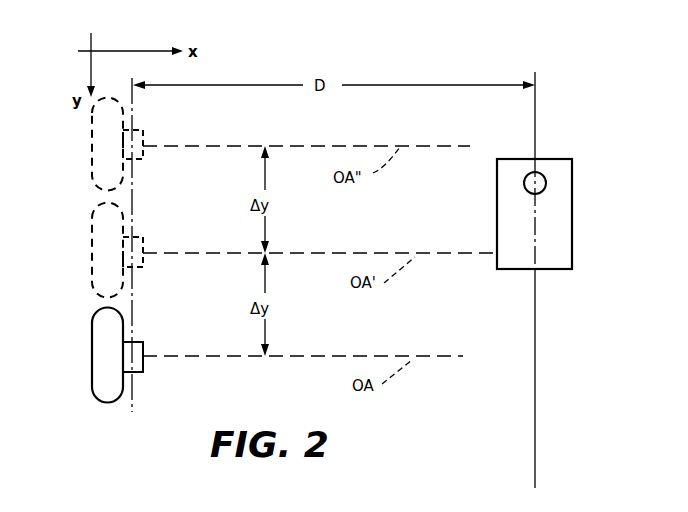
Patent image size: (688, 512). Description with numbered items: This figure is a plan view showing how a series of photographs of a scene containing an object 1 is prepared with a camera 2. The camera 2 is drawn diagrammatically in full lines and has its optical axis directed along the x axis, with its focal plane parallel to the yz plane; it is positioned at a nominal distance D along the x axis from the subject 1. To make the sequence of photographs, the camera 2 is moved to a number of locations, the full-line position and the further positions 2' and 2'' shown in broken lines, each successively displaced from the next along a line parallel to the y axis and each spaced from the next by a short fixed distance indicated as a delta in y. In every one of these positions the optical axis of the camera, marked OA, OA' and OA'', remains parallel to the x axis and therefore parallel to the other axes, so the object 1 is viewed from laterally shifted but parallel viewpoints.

The object 1 is at (579, 230).
The camera 2 is at (129, 353).
The camera location 2' is at (132, 245).
The camera location 2'' is at (133, 143).